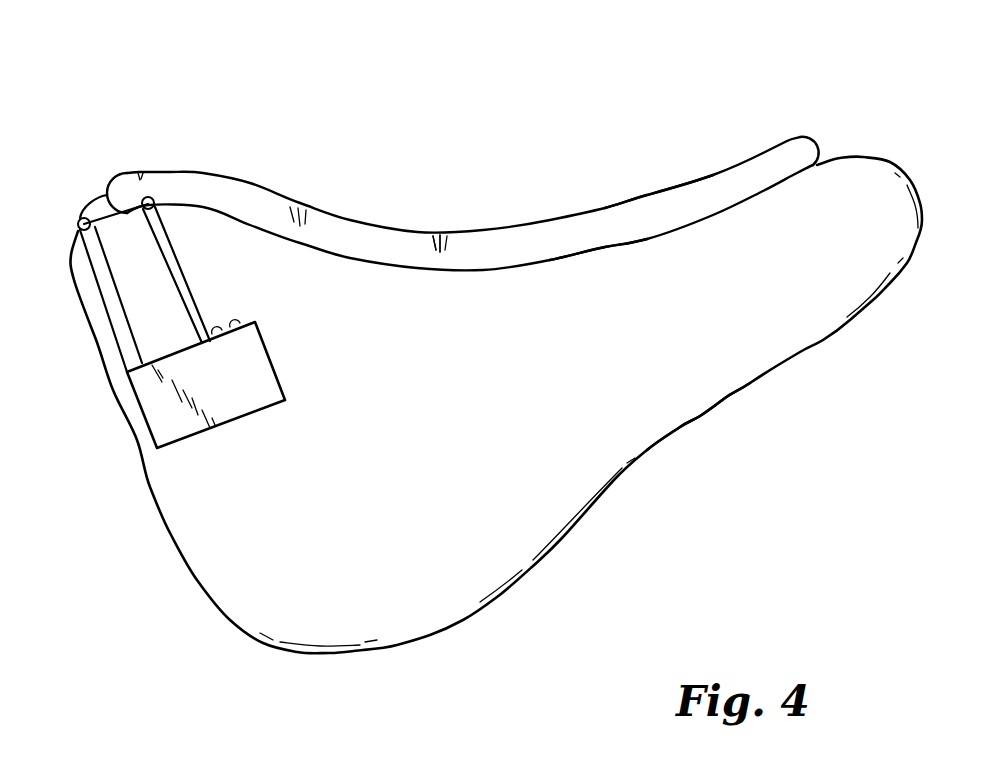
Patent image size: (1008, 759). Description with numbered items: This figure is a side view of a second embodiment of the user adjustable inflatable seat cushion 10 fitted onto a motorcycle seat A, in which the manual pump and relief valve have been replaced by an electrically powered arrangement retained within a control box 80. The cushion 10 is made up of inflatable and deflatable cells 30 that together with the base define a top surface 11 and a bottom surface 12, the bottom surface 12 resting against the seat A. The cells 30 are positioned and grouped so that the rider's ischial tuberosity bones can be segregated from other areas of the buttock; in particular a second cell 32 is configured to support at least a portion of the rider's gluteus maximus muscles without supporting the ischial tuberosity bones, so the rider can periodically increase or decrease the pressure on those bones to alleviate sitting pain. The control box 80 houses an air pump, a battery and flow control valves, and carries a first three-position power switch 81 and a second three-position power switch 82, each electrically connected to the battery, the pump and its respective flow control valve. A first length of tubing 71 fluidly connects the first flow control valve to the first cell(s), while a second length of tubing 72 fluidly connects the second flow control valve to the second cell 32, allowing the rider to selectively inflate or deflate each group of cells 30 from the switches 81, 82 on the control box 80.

The inflatable seat cushion 10 is at (710, 119).
The top surface 11 is at (636, 200).
The bottom surface 12 is at (593, 251).
The cells 30 is at (463, 232).
The second cell 32 is at (437, 233).
The first length of tubing 71 is at (113, 338).
The second length of tubing 72 is at (173, 247).
The control box 80 is at (146, 421).
The first three-position power switch 81 is at (218, 330).
The second three-position power switch 82 is at (237, 323).
The motorcycle seat A is at (680, 395).